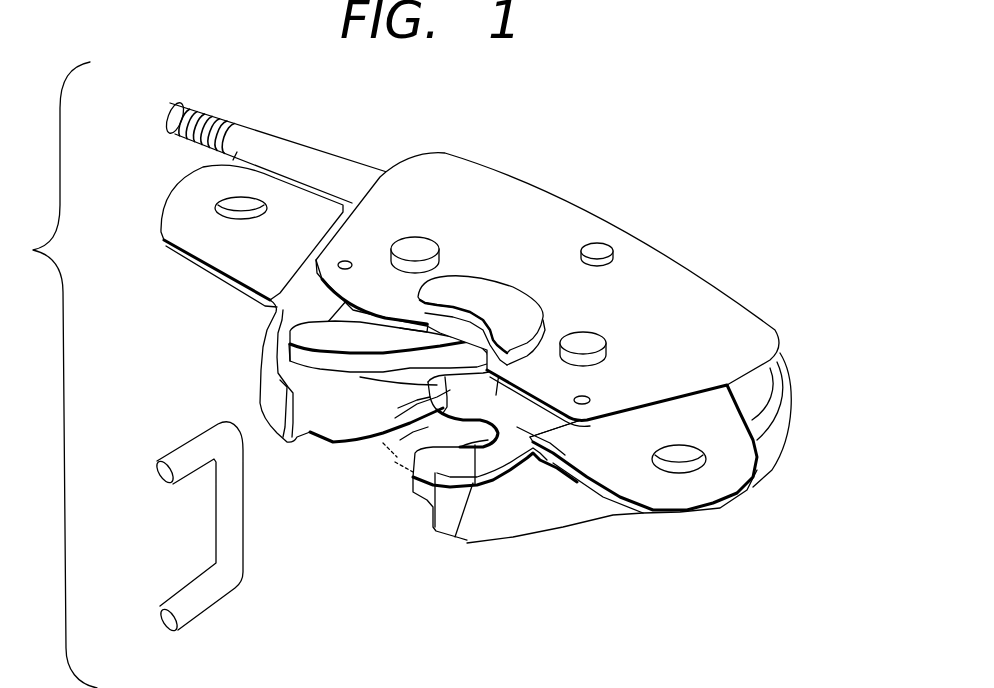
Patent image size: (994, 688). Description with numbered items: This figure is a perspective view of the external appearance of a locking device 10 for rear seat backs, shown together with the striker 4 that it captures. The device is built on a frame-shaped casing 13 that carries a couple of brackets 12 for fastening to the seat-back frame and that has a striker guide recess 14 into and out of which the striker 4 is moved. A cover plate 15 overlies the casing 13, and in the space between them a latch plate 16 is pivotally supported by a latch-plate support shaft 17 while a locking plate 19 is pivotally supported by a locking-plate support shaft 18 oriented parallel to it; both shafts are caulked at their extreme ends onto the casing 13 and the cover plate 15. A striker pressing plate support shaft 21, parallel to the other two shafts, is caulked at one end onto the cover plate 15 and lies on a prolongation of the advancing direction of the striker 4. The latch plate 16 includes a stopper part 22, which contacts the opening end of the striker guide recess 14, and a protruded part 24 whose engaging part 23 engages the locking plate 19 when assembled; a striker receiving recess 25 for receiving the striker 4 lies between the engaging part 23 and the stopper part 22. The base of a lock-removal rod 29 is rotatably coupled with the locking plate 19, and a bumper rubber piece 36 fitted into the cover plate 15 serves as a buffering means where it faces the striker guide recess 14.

The striker 4 is at (230, 572).
The latch assembly 10 is at (478, 345).
The brackets 12 is at (190, 188).
The casing 13 is at (530, 521).
The striker guide recess 14 is at (343, 450).
The cover plate 15 is at (648, 256).
The latch plate 16 is at (570, 465).
The latch-plate support shaft 17 is at (590, 343).
The locking-plate support shaft 18 is at (413, 240).
The locking plate 19 is at (300, 331).
The striker pressing plate support shaft 21 is at (588, 248).
The stopper part 22 is at (421, 497).
The engaging part 23 is at (392, 445).
The protruded part 24 is at (400, 442).
The striker receiving recess 25 is at (476, 476).
The lock-removal rod 29 is at (311, 162).
The bumper rubber piece 36 is at (487, 296).